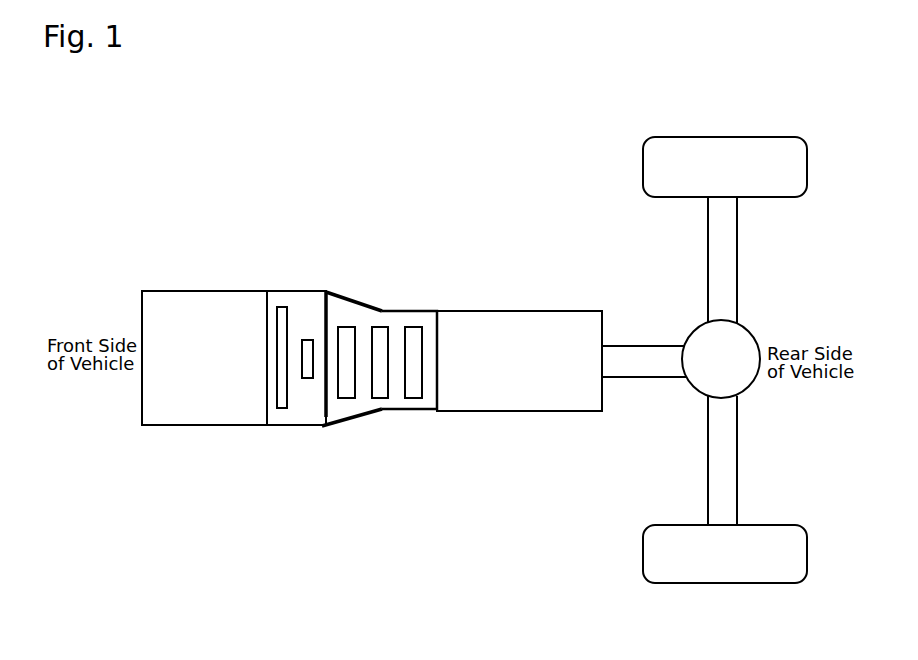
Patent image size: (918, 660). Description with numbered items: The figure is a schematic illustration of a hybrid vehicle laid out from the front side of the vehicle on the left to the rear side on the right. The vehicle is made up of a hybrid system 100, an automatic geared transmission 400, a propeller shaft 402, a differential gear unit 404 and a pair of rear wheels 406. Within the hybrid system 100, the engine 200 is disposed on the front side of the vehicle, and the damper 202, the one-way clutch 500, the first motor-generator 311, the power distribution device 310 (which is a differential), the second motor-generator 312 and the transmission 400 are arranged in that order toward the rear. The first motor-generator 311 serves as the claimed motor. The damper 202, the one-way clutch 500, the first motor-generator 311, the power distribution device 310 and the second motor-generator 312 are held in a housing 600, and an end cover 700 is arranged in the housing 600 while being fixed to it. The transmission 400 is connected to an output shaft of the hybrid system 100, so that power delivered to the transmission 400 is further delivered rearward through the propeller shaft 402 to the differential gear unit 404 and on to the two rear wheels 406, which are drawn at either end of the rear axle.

The hybrid system 100 is at (373, 202).
The engine 200 is at (193, 291).
The damper 202 is at (283, 307).
The one-way clutch 500 is at (309, 340).
The housing 600 is at (280, 425).
The end cover 700 is at (325, 400).
The power distribution device 310 is at (381, 327).
The first motor-generator 311 is at (347, 327).
The second motor-generator 312 is at (413, 327).
The automatic transmission 400 is at (507, 413).
The propeller shaft 402 is at (637, 378).
The differential gear unit 404 is at (692, 328).
The rear wheels 406 is at (728, 137).